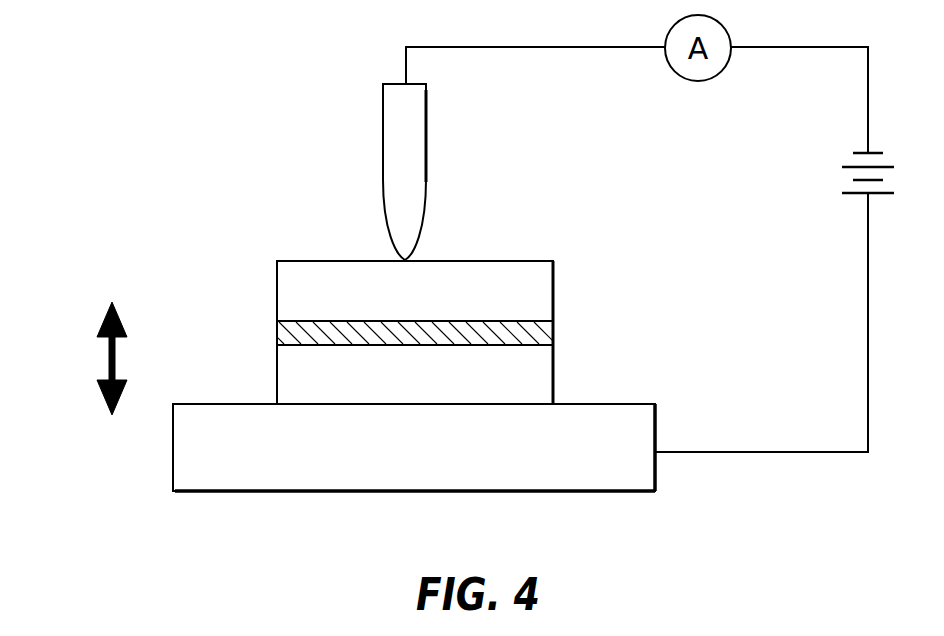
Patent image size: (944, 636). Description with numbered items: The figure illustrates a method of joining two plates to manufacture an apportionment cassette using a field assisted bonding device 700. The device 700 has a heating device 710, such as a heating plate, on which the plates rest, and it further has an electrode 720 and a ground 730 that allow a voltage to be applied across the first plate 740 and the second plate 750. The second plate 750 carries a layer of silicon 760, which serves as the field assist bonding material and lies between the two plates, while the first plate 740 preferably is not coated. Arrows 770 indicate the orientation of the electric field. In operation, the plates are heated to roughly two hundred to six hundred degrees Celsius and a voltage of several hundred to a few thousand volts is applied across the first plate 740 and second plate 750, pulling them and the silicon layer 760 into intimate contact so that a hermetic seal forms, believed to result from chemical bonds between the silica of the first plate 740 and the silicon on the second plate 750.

The field assisted bonding device 700 is at (577, 541).
The heating device 710 is at (210, 491).
The electrode 720 is at (420, 172).
The ground 730 is at (763, 452).
The first plate 740 is at (547, 287).
The second plate 750 is at (547, 377).
The layer of silicon 760 is at (290, 332).
The arrows 770 is at (110, 363).